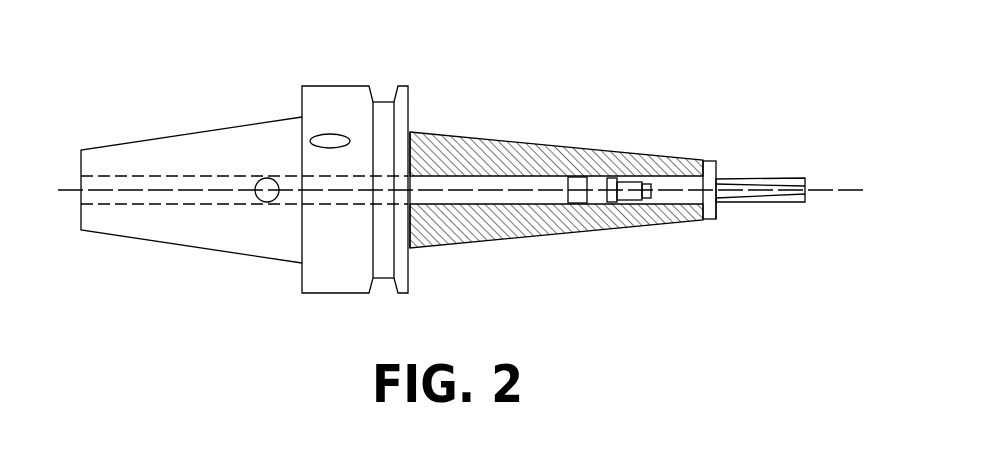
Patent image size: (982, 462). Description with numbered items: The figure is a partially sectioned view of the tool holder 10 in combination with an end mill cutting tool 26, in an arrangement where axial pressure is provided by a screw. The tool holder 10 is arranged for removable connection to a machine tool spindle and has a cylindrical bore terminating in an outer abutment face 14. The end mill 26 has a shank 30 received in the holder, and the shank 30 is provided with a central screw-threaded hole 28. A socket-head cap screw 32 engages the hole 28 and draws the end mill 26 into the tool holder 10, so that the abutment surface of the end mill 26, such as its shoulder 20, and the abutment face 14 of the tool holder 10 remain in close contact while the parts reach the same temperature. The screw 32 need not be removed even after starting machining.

The tool holder 10 is at (344, 102).
The outer abutment face 14 is at (711, 212).
The shoulder 20 is at (716, 207).
The end mill cutting tool 26 is at (766, 170).
The central screw-threaded hole 28 is at (648, 178).
The shank 30 is at (682, 170).
The socket-head cap screw 32 is at (571, 178).